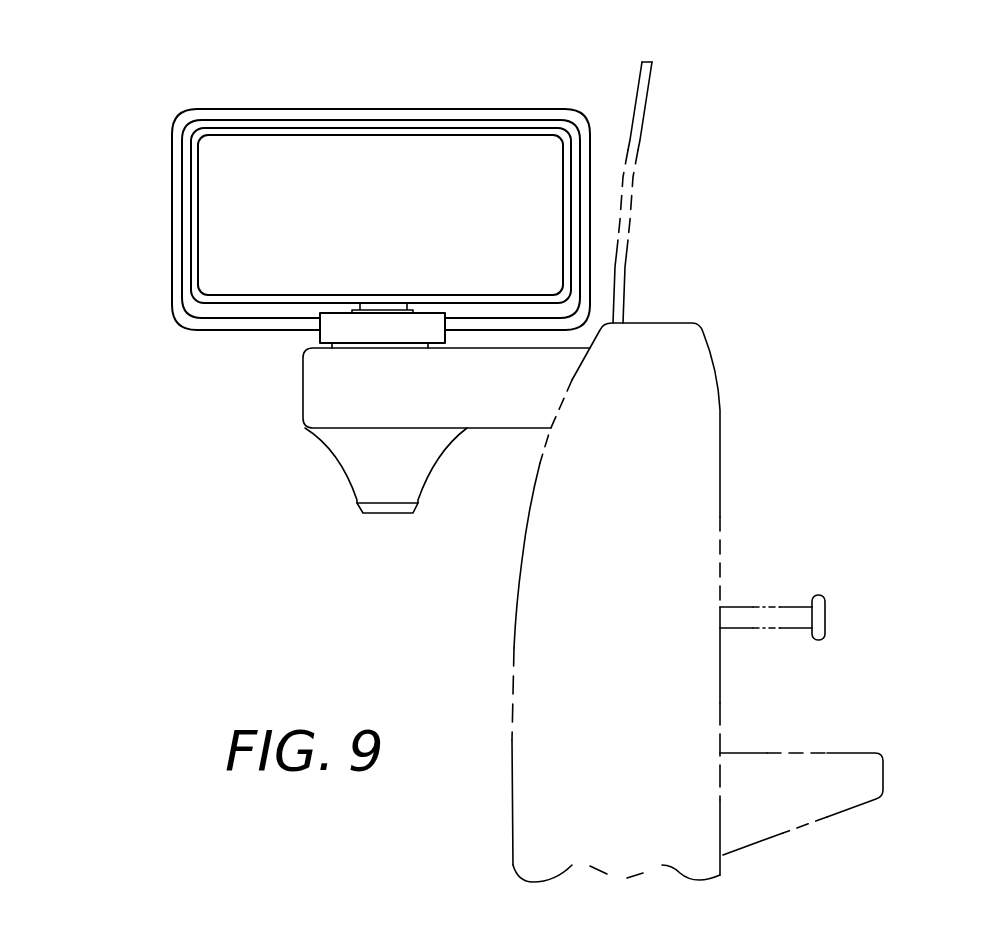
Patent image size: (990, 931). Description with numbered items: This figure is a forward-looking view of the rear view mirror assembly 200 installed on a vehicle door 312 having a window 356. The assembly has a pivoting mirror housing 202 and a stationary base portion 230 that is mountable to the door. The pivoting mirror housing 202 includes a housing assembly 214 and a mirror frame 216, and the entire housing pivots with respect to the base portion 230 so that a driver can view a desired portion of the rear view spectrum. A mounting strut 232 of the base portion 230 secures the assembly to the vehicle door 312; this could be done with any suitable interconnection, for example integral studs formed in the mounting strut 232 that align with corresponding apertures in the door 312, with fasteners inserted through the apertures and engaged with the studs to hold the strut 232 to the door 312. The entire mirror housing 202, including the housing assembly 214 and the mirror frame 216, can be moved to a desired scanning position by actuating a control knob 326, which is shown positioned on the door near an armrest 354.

The rear view mirror assembly 200 is at (413, 68).
The pivoting mirror housing 202 is at (253, 90).
The housing assembly 214 is at (177, 288).
The mirror frame 216 is at (286, 213).
The stationary base portion 230 is at (263, 448).
The mounting strut 232 is at (312, 406).
The vehicle door 312 is at (712, 362).
The control knob 326 is at (823, 603).
The armrest 354 is at (857, 753).
The window 356 is at (633, 177).